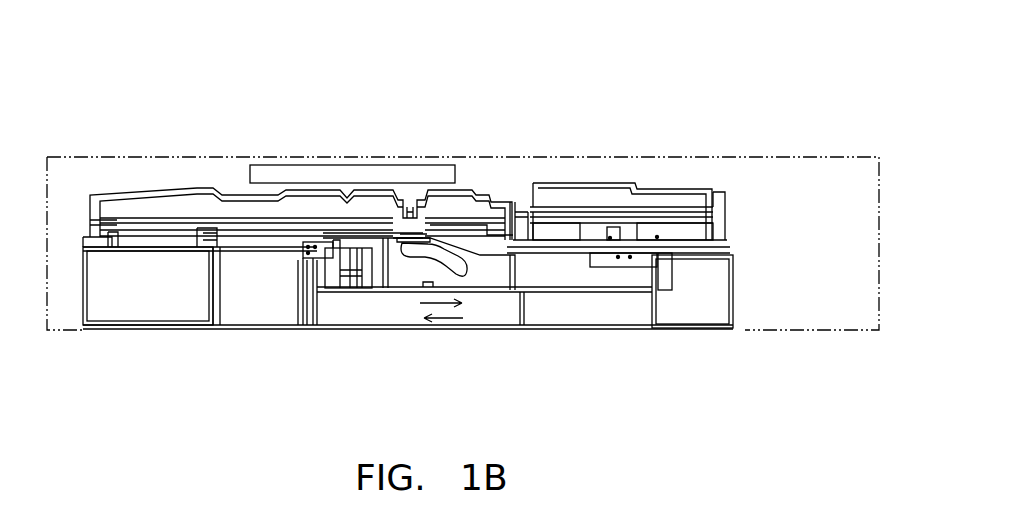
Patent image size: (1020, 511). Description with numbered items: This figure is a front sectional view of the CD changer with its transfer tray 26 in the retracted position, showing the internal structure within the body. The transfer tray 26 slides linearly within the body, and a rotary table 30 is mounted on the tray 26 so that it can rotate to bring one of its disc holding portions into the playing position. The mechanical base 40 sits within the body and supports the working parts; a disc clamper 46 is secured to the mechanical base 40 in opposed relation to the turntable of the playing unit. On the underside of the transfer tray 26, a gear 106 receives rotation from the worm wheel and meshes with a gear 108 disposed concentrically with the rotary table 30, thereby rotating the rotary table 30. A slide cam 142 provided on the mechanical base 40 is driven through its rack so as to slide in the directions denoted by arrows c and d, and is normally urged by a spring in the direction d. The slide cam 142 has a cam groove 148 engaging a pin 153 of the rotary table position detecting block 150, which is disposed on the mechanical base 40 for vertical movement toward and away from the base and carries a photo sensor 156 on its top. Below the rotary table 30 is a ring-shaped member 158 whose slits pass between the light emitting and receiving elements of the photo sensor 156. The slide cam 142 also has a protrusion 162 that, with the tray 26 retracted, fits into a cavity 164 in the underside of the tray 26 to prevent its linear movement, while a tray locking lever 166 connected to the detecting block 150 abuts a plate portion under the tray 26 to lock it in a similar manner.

The transfer tray 26 is at (147, 217).
The rotary table 30 is at (492, 202).
The mechanical base 40 is at (592, 292).
The disc clamper 46 is at (357, 165).
The gear 106 is at (250, 207).
The gear 108 is at (290, 193).
The slide cam 142 is at (487, 268).
The cam groove 148 is at (443, 238).
The rotary table position detecting block 150 is at (387, 255).
The pin 153 is at (405, 255).
The photo sensor 156 is at (412, 215).
The ring-shaped member 158 is at (323, 205).
The protrusion 162 is at (615, 207).
The cavity 164 is at (637, 233).
The tray locking lever 166 is at (335, 275).
The direction c is at (437, 320).
The direction d is at (455, 305).